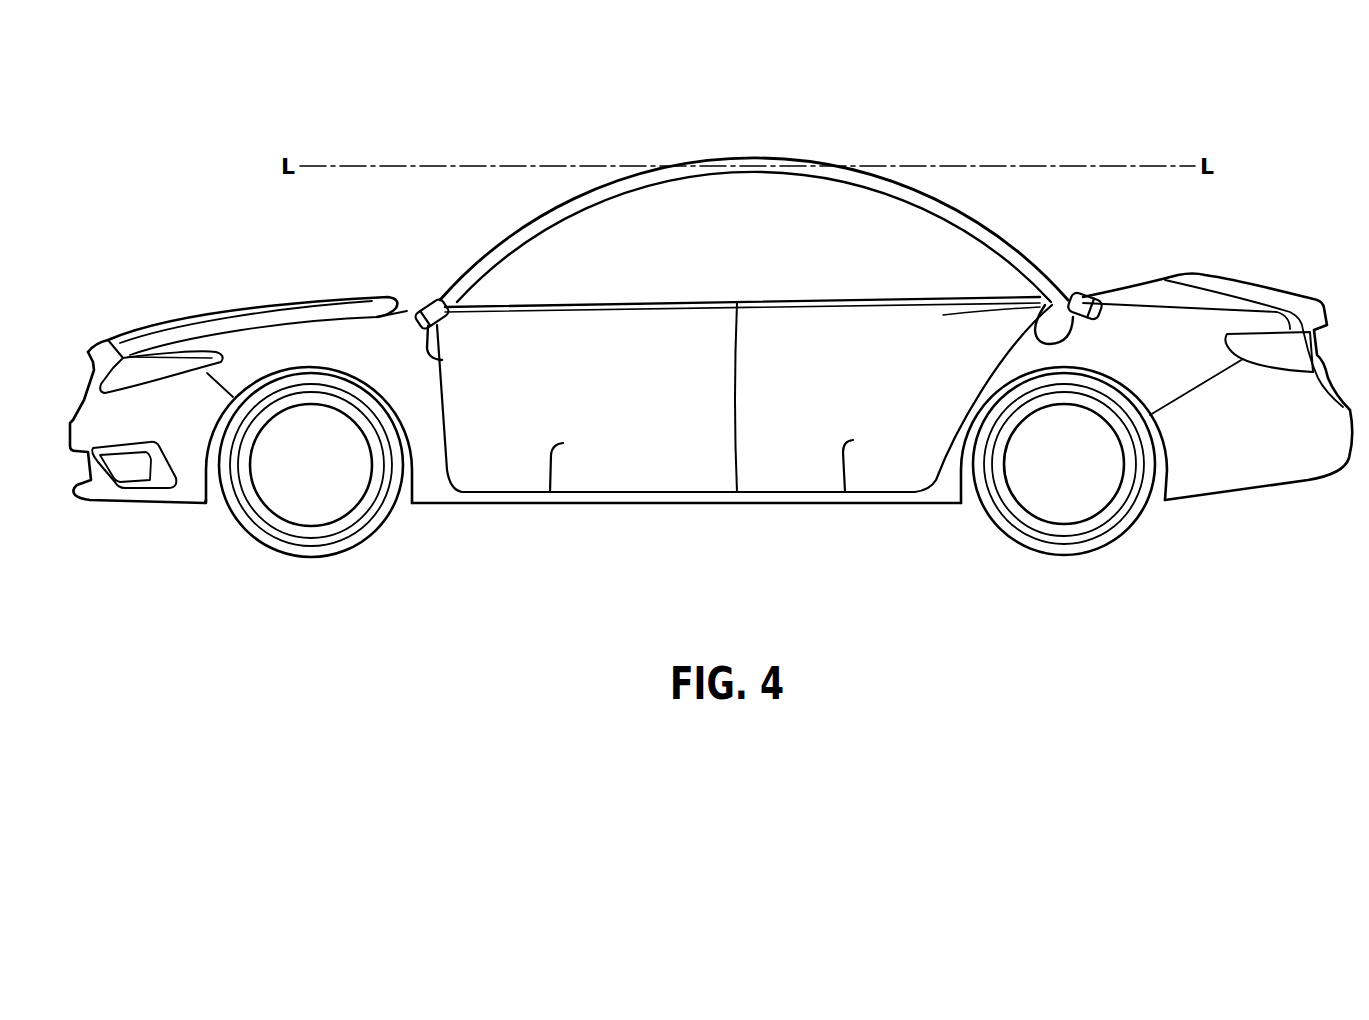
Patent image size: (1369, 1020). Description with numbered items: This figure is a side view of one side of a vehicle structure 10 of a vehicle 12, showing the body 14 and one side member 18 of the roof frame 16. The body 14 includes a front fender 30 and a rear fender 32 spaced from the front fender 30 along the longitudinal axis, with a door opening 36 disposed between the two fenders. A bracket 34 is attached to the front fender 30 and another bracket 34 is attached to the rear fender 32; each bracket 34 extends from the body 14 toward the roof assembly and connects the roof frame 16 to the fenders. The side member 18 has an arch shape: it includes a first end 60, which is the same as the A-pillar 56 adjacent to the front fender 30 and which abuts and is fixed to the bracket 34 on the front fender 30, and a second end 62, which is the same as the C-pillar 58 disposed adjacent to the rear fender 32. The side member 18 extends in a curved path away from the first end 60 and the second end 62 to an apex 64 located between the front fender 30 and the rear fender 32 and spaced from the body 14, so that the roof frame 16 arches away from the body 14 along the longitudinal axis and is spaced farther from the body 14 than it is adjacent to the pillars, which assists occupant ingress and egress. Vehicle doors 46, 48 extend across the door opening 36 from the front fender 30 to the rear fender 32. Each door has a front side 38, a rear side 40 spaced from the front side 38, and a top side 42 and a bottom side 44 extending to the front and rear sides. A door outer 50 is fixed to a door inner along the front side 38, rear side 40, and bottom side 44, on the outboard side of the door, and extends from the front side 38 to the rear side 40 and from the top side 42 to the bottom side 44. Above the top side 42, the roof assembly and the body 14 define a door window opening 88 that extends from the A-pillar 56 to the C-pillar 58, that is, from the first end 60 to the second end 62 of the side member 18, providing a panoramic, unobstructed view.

The vehicle structure 10 is at (408, 274).
The vehicle 12 is at (223, 148).
The body 14 is at (202, 296).
The roof frame 16 is at (989, 224).
The side member 18 is at (534, 219).
The front fender 30 is at (336, 355).
The rear fender 32 is at (1138, 363).
The bracket 34 is at (442, 360).
The door opening 36 is at (493, 527).
The front side 38 is at (440, 398).
The rear side 40 is at (735, 405).
The top side 42 is at (577, 306).
The bottom side 44 is at (563, 443).
The vehicle door 46 is at (600, 491).
The vehicle door 48 is at (823, 490).
The door outer 50 is at (571, 417).
The A-pillar 56 is at (482, 234).
The C-pillar 58 is at (1049, 260).
The first end 60 is at (464, 249).
The second end 62 is at (1072, 276).
The apex 64 is at (748, 165).
The door window opening 88 is at (698, 242).